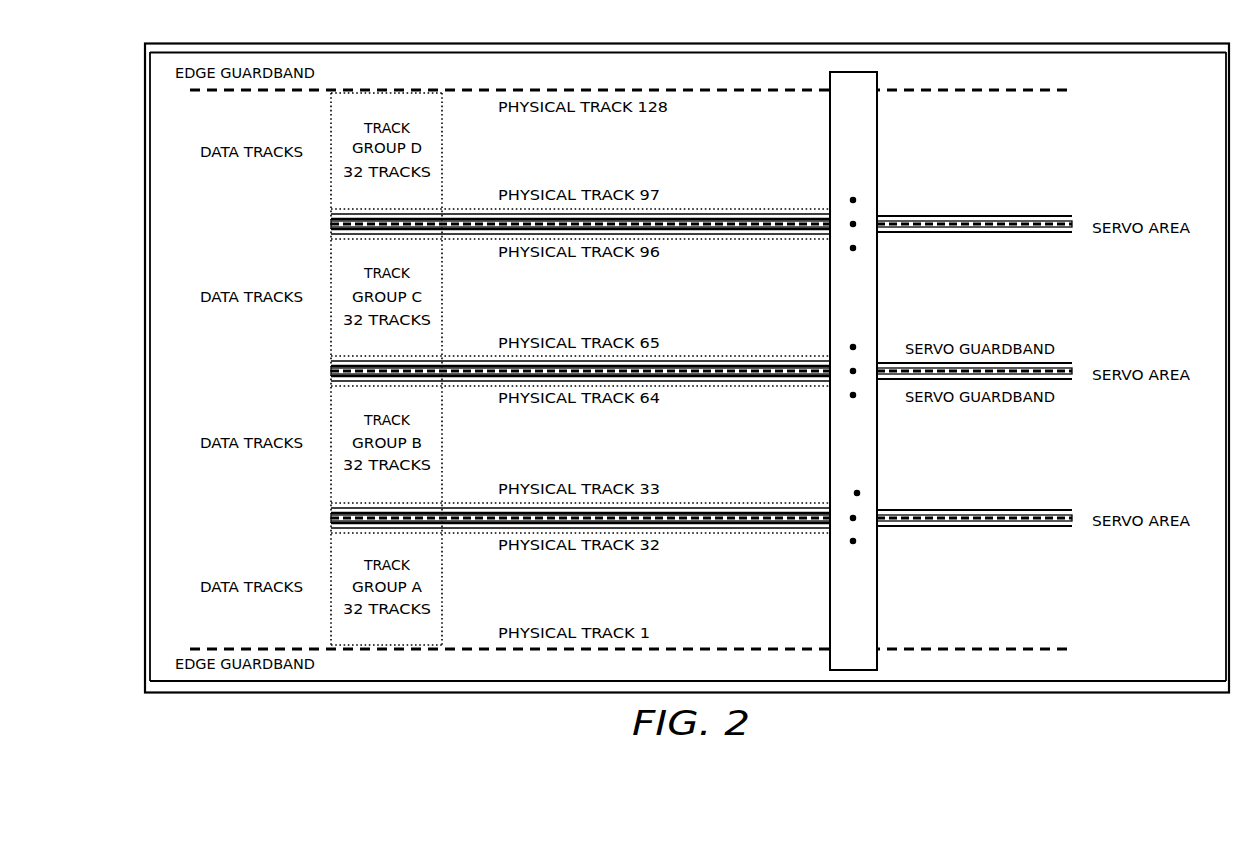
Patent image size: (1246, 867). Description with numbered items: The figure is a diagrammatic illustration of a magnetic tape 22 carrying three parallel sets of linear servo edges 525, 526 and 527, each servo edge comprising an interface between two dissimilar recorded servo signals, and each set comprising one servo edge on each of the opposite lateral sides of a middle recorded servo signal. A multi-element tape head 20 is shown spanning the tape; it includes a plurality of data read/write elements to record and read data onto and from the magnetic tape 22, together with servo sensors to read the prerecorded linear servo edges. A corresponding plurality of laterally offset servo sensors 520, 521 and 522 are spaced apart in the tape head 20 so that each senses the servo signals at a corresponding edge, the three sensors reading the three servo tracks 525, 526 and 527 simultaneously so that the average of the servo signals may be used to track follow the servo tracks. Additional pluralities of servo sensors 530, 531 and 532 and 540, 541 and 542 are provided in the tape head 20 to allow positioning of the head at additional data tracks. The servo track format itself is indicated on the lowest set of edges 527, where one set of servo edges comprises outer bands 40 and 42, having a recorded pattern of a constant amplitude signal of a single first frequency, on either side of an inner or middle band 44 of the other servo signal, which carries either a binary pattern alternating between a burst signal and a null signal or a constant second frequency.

The magnetic tape 22 is at (874, 44).
The multi-element tape head 20 is at (877, 137).
The servo sensor 520 is at (849, 222).
The servo sensor 521 is at (849, 375).
The servo sensor 522 is at (849, 522).
The servo sensor 530 is at (853, 195).
The servo sensor 531 is at (853, 342).
The servo sensor 532 is at (861, 492).
The servo sensor 540 is at (857, 249).
The servo sensor 541 is at (853, 400).
The servo sensor 542 is at (853, 547).
The set of linear servo edges 525 is at (987, 203).
The set of linear servo edges 526 is at (1068, 345).
The set of linear servo edges 527 is at (981, 510).
The outer band 40 is at (977, 509).
The outer band 42 is at (978, 527).
The middle band 44 is at (1073, 523).